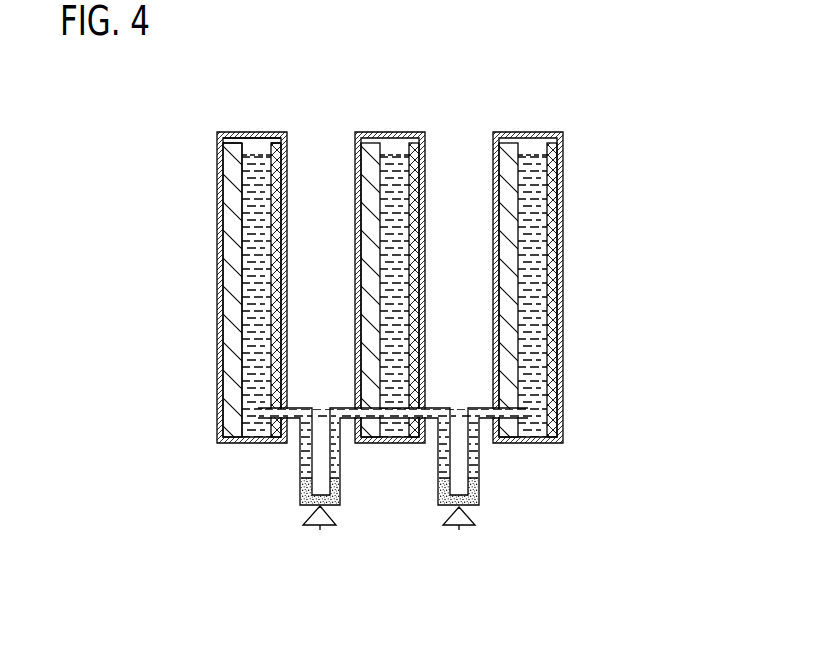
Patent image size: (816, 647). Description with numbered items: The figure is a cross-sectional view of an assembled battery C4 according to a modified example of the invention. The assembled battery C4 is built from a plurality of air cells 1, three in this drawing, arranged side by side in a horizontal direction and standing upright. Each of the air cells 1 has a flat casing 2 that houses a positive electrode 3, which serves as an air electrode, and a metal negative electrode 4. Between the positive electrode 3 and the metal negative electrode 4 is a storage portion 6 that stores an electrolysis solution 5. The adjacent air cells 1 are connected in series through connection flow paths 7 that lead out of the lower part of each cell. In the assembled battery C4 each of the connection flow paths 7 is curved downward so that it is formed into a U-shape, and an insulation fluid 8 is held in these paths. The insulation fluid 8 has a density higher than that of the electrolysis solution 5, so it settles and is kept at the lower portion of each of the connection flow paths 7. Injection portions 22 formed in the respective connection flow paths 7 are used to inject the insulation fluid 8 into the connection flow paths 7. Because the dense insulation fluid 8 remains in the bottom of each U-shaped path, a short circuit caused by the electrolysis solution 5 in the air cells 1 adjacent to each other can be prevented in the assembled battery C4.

The air cell 1 is at (270, 126).
The casing 2 is at (221, 287).
The positive electrode 3 is at (198, 290).
The metal negative electrode 4 is at (198, 290).
The electrolysis solution 5 is at (213, 296).
The storage portion 6 is at (225, 264).
The connection flow path 7 is at (345, 408).
The insulation fluid 8 is at (300, 494).
The injection portion 22 is at (320, 525).
The assembled battery C4 is at (632, 156).